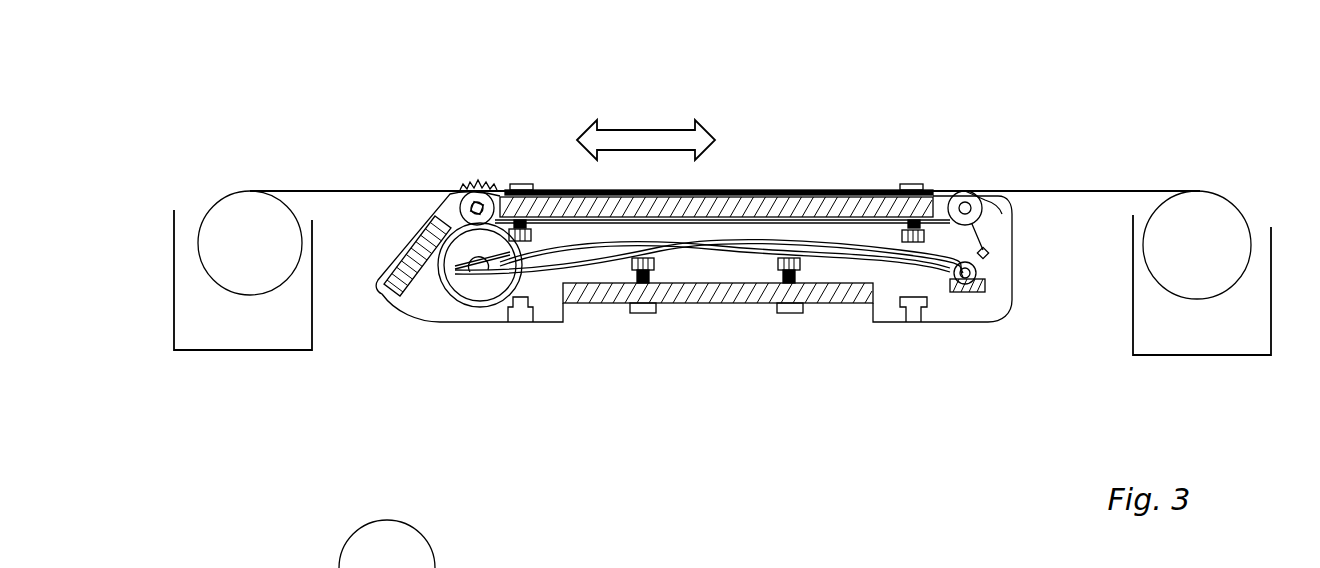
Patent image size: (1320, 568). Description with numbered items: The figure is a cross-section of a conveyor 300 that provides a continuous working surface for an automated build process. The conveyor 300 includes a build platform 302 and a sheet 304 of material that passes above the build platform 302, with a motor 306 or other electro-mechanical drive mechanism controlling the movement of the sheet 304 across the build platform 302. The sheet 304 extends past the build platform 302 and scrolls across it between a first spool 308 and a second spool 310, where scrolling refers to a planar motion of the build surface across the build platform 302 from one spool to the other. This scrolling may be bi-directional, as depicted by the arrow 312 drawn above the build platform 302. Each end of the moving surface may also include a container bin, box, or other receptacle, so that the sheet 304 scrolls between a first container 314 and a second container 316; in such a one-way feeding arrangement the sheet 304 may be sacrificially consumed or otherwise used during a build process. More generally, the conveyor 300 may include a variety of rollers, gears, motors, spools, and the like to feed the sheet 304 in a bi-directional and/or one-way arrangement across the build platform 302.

The conveyor 300 is at (1068, 116).
The build platform 302 is at (753, 205).
The sheet 304 is at (368, 190).
The motor 306 is at (480, 307).
The first spool 308 is at (250, 243).
The second spool 310 is at (1197, 245).
The arrow 312 is at (654, 128).
The first container 314 is at (225, 350).
The second container 316 is at (1152, 355).